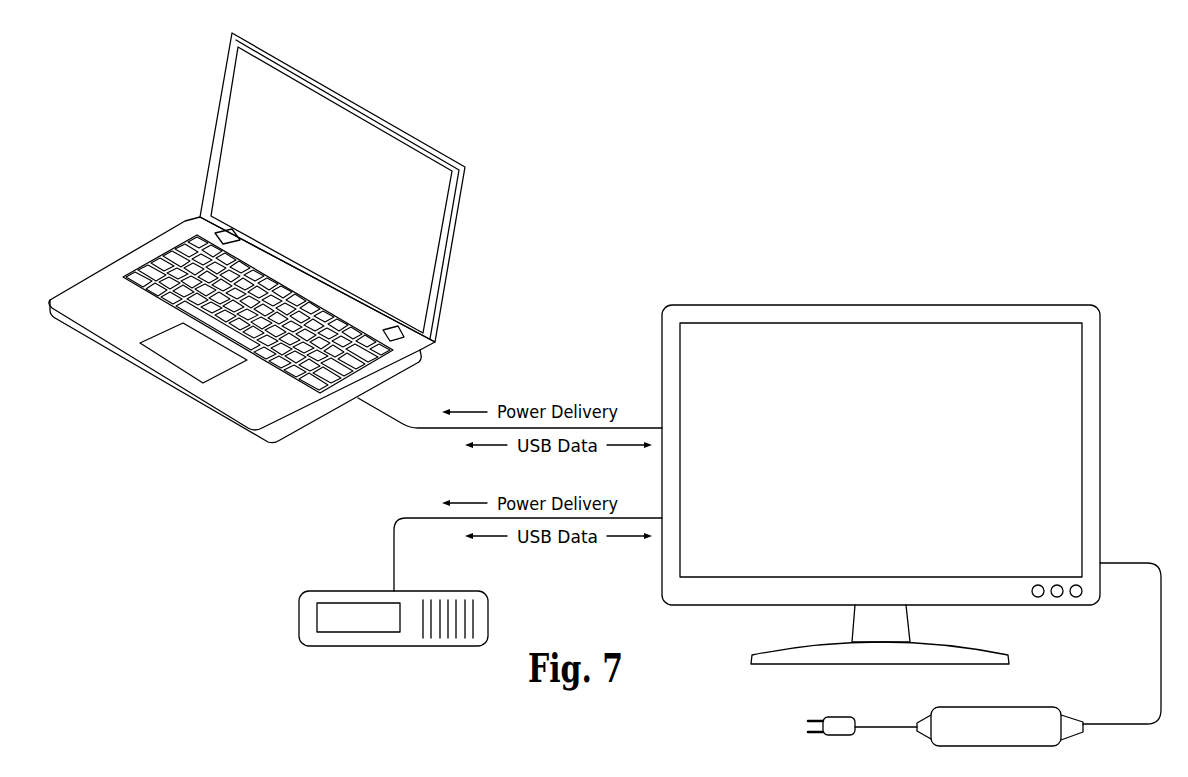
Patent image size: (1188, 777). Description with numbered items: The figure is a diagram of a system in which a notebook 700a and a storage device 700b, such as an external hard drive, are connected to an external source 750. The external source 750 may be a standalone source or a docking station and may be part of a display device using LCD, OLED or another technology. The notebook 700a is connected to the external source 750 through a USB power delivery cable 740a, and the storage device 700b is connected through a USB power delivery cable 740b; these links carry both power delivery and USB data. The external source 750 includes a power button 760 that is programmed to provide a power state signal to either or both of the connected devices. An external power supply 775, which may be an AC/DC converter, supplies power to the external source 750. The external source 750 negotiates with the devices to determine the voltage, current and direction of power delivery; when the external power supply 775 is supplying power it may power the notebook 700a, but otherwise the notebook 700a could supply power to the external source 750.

The notebook 700a is at (353, 93).
The storage device 700b is at (299, 620).
The USB power delivery cable 740a is at (408, 431).
The USB power delivery cable 740b is at (393, 540).
The external source 750 is at (883, 303).
The power button 760 is at (1076, 598).
The external power supply 775 is at (1042, 707).